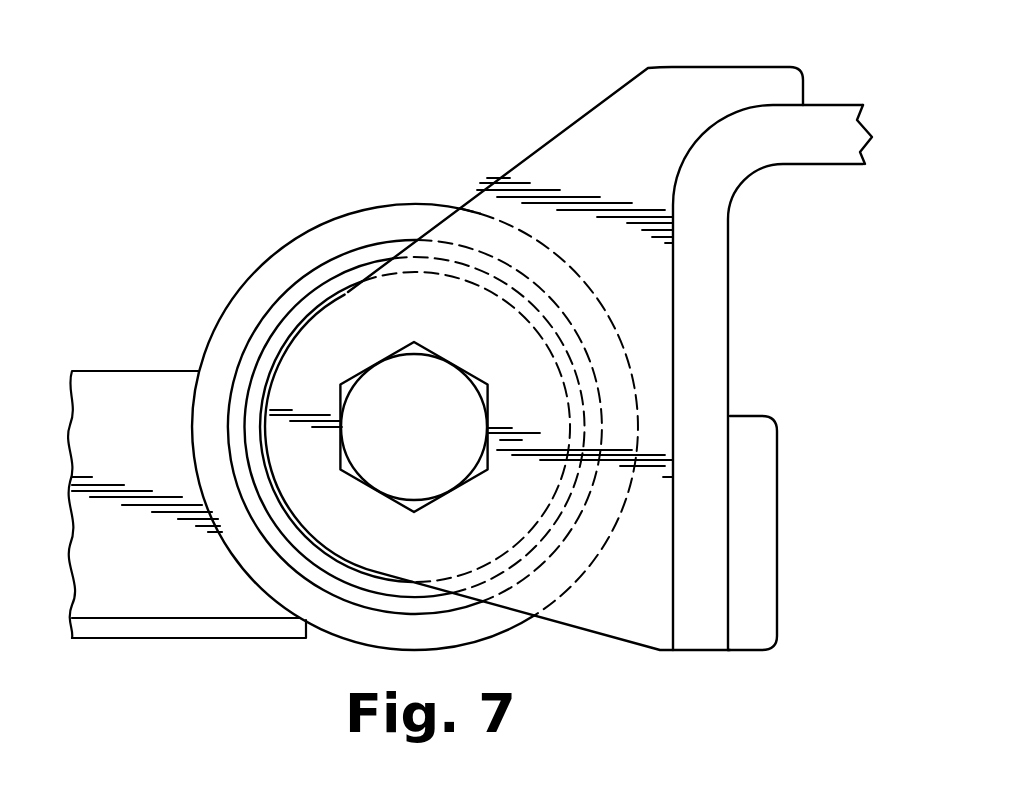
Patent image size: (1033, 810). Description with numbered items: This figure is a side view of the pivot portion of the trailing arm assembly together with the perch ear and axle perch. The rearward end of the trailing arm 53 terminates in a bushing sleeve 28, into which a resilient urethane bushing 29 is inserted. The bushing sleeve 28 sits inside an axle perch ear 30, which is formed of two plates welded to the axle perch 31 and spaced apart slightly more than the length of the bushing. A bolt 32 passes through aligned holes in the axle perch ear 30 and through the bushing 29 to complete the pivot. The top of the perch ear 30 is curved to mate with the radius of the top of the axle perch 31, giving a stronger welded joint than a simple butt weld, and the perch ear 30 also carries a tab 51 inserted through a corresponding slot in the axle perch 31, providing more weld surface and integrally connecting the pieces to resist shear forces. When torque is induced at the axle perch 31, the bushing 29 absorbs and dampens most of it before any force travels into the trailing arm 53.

The bushing sleeve 28 is at (291, 241).
The resilient urethane bushing 29 is at (273, 329).
The axle perch ear 30 is at (717, 66).
The axle perch 31 is at (733, 352).
The bolt 32 is at (457, 366).
The tab 51 is at (776, 564).
The trailing arm 53 is at (244, 640).